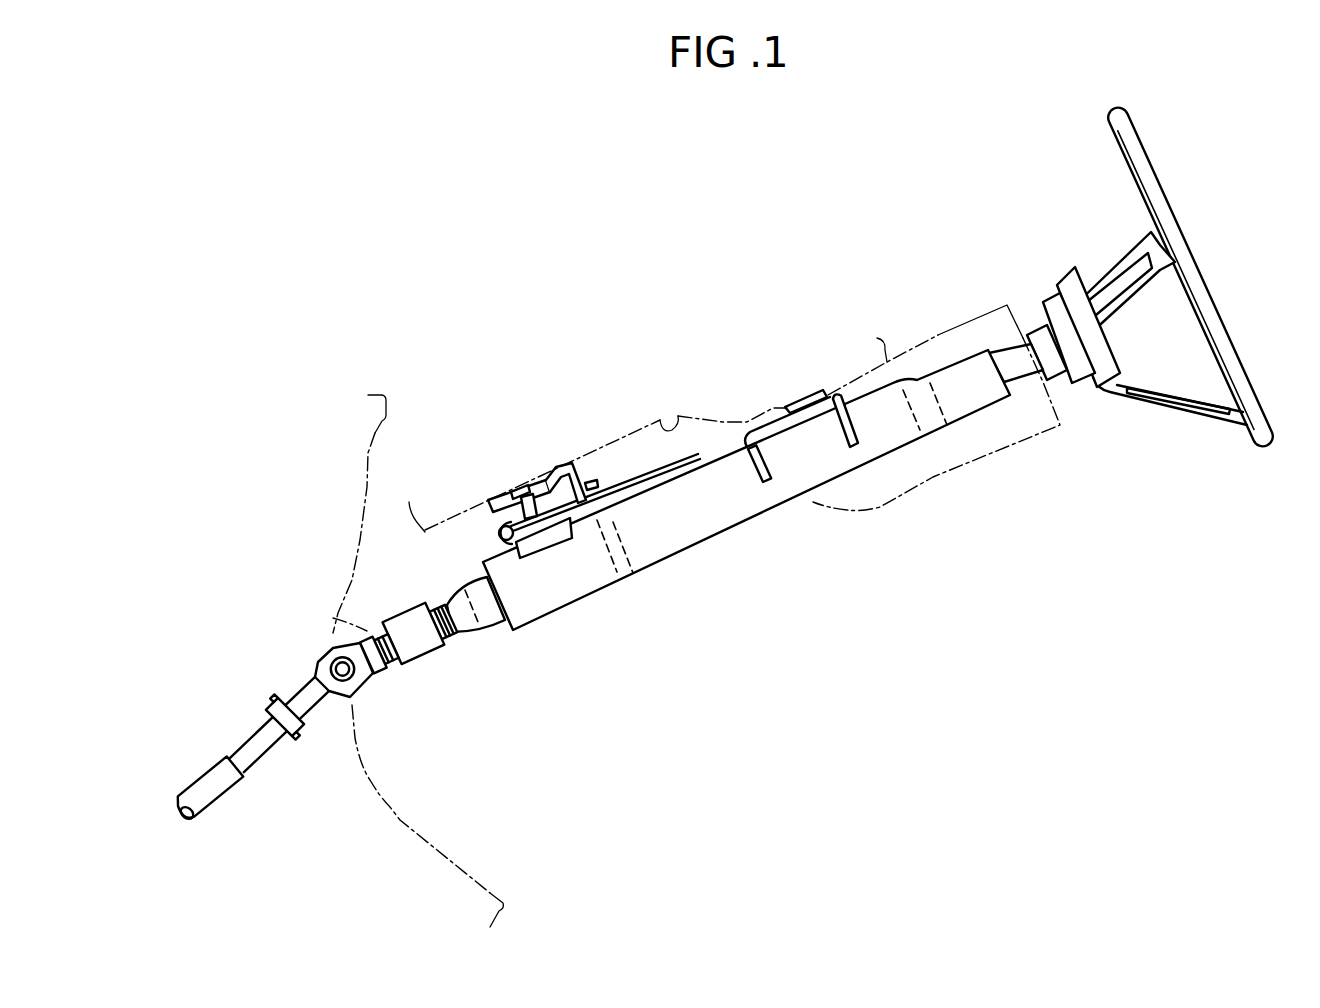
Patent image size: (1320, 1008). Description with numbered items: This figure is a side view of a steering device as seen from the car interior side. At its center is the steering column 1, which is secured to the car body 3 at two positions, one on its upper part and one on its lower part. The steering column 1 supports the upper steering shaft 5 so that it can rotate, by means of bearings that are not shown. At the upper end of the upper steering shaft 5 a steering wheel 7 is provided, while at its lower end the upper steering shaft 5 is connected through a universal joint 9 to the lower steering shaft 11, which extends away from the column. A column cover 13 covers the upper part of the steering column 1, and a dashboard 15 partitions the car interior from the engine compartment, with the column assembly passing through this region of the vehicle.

The steering column 1 is at (693, 530).
The car body 3 is at (670, 412).
The upper steering shaft 5 is at (492, 613).
The steering wheel 7 is at (1168, 195).
The universal joint 9 is at (326, 657).
The lower steering shaft 11 is at (218, 792).
The column cover 13 is at (953, 477).
The dashboard 15 is at (390, 807).